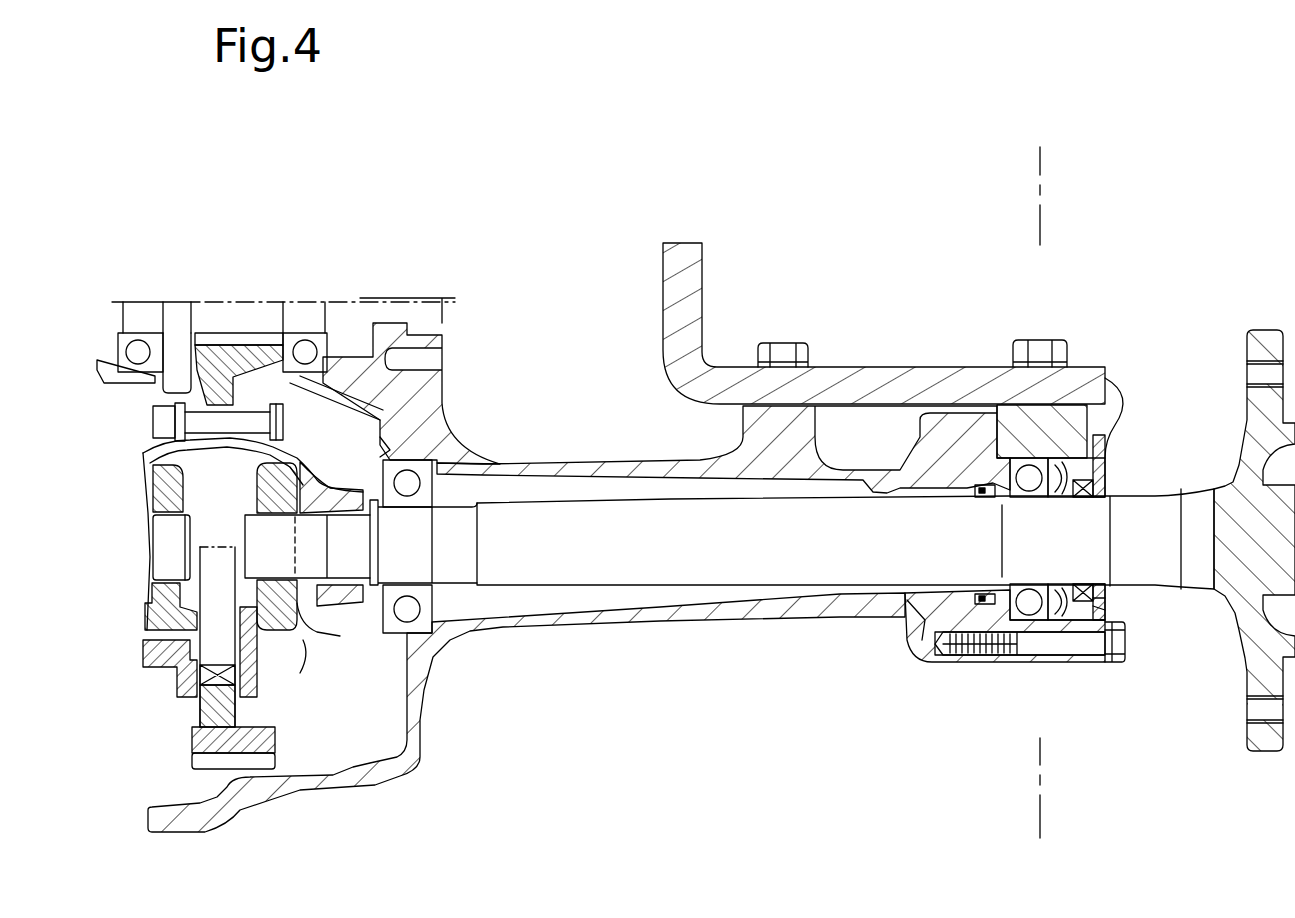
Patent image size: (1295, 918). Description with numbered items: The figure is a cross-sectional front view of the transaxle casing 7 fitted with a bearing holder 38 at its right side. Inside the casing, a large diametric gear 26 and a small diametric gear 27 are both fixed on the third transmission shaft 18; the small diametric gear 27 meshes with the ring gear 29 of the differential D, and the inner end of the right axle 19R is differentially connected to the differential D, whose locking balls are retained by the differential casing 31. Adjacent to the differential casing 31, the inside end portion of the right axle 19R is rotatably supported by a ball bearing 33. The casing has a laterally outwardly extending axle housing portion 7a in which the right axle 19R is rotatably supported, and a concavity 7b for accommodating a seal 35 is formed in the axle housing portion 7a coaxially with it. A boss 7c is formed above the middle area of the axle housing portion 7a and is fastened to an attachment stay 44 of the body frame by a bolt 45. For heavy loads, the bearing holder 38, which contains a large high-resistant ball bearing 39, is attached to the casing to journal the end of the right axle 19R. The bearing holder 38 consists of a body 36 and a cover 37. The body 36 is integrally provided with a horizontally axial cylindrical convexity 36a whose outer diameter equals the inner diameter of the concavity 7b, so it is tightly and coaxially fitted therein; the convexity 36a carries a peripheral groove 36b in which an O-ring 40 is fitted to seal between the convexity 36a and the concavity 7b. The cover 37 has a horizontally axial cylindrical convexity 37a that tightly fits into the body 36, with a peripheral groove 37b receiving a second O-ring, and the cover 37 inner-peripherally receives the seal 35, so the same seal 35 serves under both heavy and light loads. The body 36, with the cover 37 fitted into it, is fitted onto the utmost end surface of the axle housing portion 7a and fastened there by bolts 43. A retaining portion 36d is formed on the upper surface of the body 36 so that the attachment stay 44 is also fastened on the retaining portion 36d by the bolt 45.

The transaxle casing 7 is at (1028, 163).
The axle housing portion 7a is at (668, 620).
The concavity 7b is at (1007, 640).
The boss 7c is at (743, 430).
The third transmission shaft 18 is at (300, 307).
The right axle 19R is at (564, 569).
The large diametric gear 26 is at (177, 343).
The small diametric gear 27 is at (238, 333).
The ring gear 29 is at (283, 392).
The differential casing 31 is at (276, 647).
The ball bearing 33 is at (370, 630).
The seal 35 is at (1085, 587).
The body 36 is at (1040, 663).
The convexity 36a is at (922, 625).
The groove 36b is at (985, 497).
The retaining portion 36d is at (1127, 390).
The cover 37 is at (1098, 665).
The convexity 37a is at (1055, 478).
The groove 37b is at (1092, 432).
The bearing holder 38 is at (1100, 727).
The ball bearing 39 is at (1105, 600).
The O-ring 40 is at (965, 655).
The bolt 43 is at (1122, 640).
The attachment stay 44 is at (663, 302).
The bolt 45 is at (800, 343).
The differential D is at (334, 732).